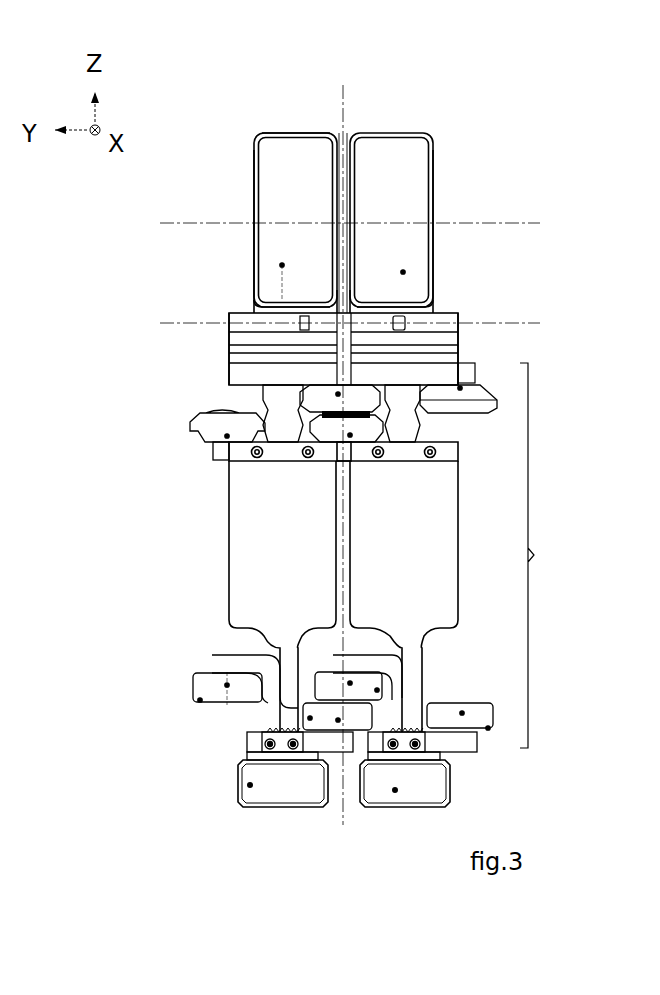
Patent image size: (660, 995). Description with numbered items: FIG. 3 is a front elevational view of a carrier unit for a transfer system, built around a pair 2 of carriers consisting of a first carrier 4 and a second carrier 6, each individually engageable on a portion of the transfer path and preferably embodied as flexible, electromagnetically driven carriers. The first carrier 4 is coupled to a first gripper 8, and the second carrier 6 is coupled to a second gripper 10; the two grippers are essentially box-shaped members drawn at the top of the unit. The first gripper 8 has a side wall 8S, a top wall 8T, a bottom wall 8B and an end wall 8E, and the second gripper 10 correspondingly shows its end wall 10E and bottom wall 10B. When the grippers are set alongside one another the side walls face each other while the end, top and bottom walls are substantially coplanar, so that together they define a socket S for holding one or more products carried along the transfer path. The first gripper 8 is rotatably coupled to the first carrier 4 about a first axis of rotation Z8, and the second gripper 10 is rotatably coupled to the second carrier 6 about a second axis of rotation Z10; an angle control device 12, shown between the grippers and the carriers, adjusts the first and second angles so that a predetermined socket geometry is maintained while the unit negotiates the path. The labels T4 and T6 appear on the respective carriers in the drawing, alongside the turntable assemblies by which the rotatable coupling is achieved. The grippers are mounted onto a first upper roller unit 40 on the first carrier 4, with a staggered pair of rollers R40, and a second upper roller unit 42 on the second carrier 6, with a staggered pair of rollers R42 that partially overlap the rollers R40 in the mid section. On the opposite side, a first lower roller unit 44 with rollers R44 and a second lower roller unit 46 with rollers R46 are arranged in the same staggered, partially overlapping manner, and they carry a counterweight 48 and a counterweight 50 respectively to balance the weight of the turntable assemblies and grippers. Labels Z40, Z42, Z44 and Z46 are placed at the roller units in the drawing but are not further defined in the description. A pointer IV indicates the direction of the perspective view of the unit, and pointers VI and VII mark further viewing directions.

The pair of carriers 2 is at (543, 555).
The first carrier 4 is at (250, 537).
The second carrier 6 is at (434, 585).
The first gripper 8 is at (282, 126).
The top wall 8T is at (298, 145).
The side wall 8S is at (265, 170).
The end wall 8E is at (323, 257).
The bottom wall 8B is at (290, 300).
The second gripper 10 is at (410, 126).
The end wall 10E is at (404, 257).
The bottom wall 10B is at (418, 272).
The angle control device 12 is at (328, 308).
The socket S is at (322, 168).
The first axis of rotation Z8 is at (234, 202).
The second axis of rotation Z10 is at (437, 207).
The first body part T4 is at (172, 251).
The second body part T6 is at (495, 256).
The first upper roller unit 40 is at (162, 415).
The pin of first clamping jaw Z40 is at (263, 380).
The rollers R40 is at (190, 428).
The second upper roller unit 42 is at (532, 399).
The pin of second clamping jaw Z42 is at (478, 384).
The rollers R42 is at (497, 405).
The first lower roller unit 44 is at (166, 700).
The pin of third clamping jaw Z44 is at (225, 685).
The rollers R44 is at (200, 701).
The second lower roller unit 46 is at (533, 737).
The pin of fourth clamping jaw Z46 is at (440, 652).
The rollers R46 is at (379, 690).
The counterweight 48 is at (244, 802).
The counterweight 50 is at (395, 792).
The section line VI is at (163, 320).
The section line VII is at (163, 220).
The pointer IV is at (124, 784).